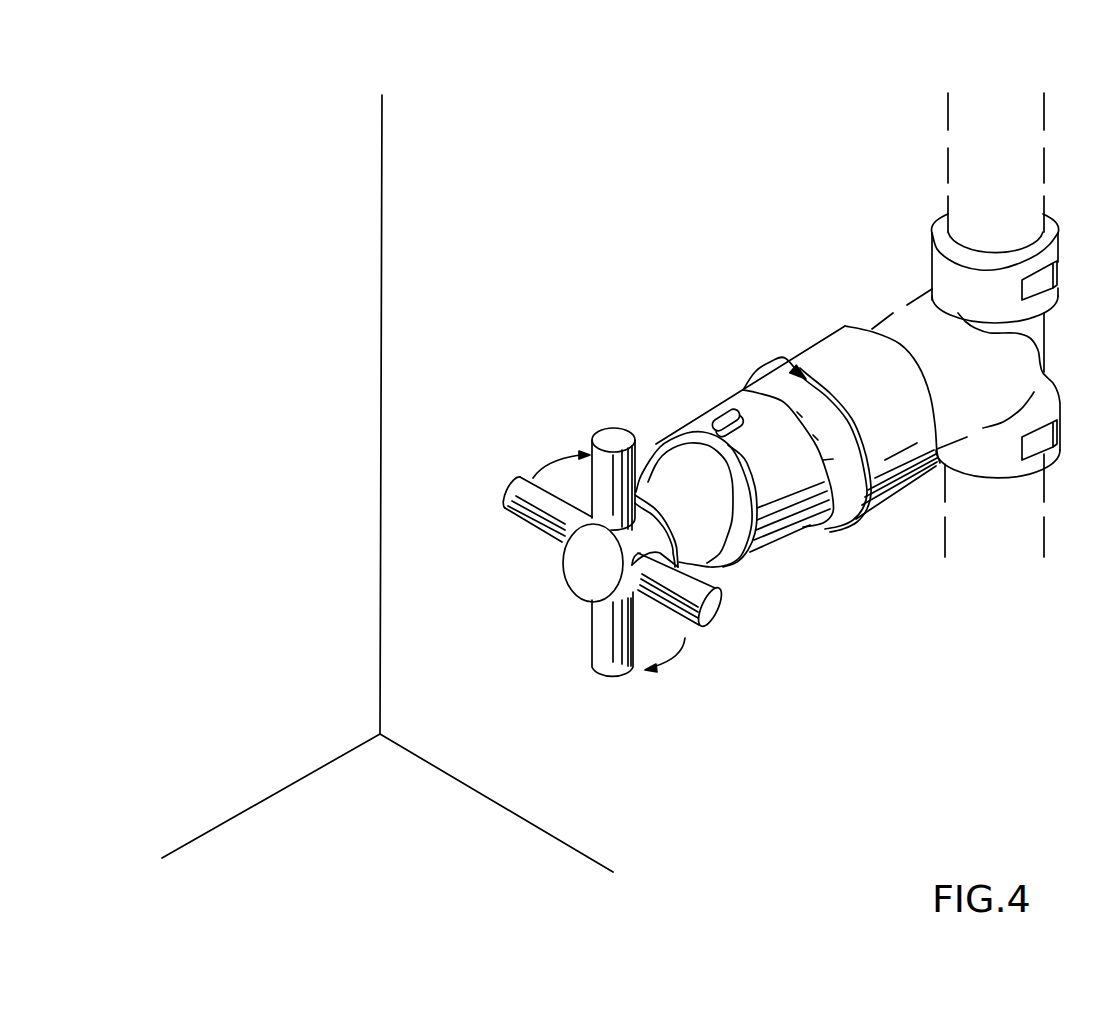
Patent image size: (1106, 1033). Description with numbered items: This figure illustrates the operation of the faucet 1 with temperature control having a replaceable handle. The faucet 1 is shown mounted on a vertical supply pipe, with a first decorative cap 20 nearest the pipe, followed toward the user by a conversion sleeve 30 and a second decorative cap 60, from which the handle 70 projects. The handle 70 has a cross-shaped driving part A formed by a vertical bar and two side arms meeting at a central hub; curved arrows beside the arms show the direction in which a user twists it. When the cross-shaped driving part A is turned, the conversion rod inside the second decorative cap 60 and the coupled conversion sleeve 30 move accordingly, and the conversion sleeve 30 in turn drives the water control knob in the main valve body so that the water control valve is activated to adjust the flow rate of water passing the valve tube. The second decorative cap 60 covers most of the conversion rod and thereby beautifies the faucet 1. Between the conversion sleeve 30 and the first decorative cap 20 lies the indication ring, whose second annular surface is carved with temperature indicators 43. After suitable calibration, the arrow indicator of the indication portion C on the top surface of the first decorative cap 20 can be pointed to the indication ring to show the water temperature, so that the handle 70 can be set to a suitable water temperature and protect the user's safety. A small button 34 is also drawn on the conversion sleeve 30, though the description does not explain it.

The faucet 1 is at (823, 576).
The first decorative cap 20 is at (825, 337).
The conversion sleeve 30 is at (757, 413).
The push button 34 is at (715, 423).
The temperature indicators 43 is at (748, 400).
The second decorative cap 60 is at (672, 470).
The handle 70 is at (595, 568).
The cross-shaped driving part A is at (553, 523).
The indication portion C is at (778, 397).